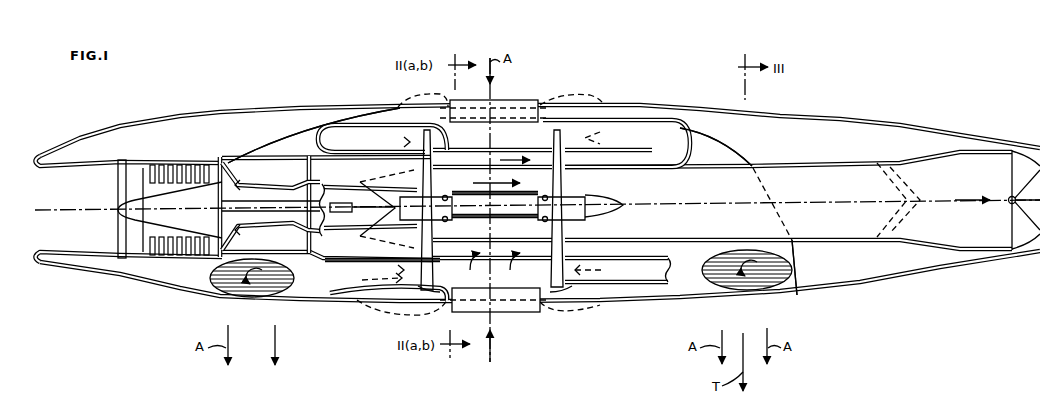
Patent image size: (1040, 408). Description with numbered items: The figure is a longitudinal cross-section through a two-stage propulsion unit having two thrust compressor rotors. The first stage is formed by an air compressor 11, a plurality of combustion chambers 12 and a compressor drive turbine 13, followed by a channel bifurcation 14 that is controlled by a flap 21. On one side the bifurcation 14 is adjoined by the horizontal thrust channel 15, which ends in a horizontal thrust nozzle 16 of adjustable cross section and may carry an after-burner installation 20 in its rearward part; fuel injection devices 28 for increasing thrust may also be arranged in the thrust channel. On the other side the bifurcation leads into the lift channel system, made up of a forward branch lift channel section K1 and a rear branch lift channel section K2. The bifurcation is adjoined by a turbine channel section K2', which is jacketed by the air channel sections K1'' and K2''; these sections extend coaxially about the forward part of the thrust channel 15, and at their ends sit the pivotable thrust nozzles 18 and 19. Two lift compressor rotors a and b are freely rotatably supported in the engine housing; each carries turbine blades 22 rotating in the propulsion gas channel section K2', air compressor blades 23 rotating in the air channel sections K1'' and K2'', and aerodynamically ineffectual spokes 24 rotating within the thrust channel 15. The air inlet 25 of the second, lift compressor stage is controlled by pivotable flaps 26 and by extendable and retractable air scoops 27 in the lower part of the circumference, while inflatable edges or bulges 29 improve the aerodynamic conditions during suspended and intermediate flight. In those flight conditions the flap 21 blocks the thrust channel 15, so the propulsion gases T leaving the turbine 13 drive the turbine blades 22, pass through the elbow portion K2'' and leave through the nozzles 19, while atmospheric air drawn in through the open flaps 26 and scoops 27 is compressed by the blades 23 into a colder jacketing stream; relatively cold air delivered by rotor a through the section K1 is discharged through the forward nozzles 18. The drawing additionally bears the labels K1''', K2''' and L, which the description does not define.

The air compressor 11 is at (170, 166).
The combustion chambers 12 is at (248, 170).
The compressor drive turbine 13 is at (312, 183).
The channel bifurcation 14 is at (367, 177).
The horizontal thrust channel 15 is at (782, 176).
The horizontal thrust nozzle 16 is at (1030, 150).
The pivotable thrust nozzles 18 is at (226, 285).
The pivotable thrust nozzles 19 is at (785, 275).
The after-burner installation 20 is at (902, 171).
The flap 21 is at (372, 261).
The turbine blades 22 is at (425, 178).
The air compressor blades 23 is at (419, 286).
The aerodynamically ineffectual spokes 24 is at (423, 232).
The air inlet 25 is at (542, 322).
The pivotable flaps 26 is at (518, 100).
The air scoops 27 is at (505, 312).
The fuel injection devices 28 is at (606, 270).
The inflatable edges or bulges 29 is at (574, 93).
The forward branch lift channel section K1 is at (314, 112).
The air channel section K1'' is at (382, 106).
The first flow lower branch K1''' is at (297, 280).
The rear branch lift channel section K2 is at (712, 112).
The turbine channel section K2' is at (648, 178).
The air channel section K2'' is at (616, 111).
The second flow lower branch K2''' is at (814, 267).
The lift compressor rotor a is at (424, 207).
The lift compressor rotor b is at (556, 207).
The propulsion gases T is at (500, 180).
The air flow L is at (813, 200).